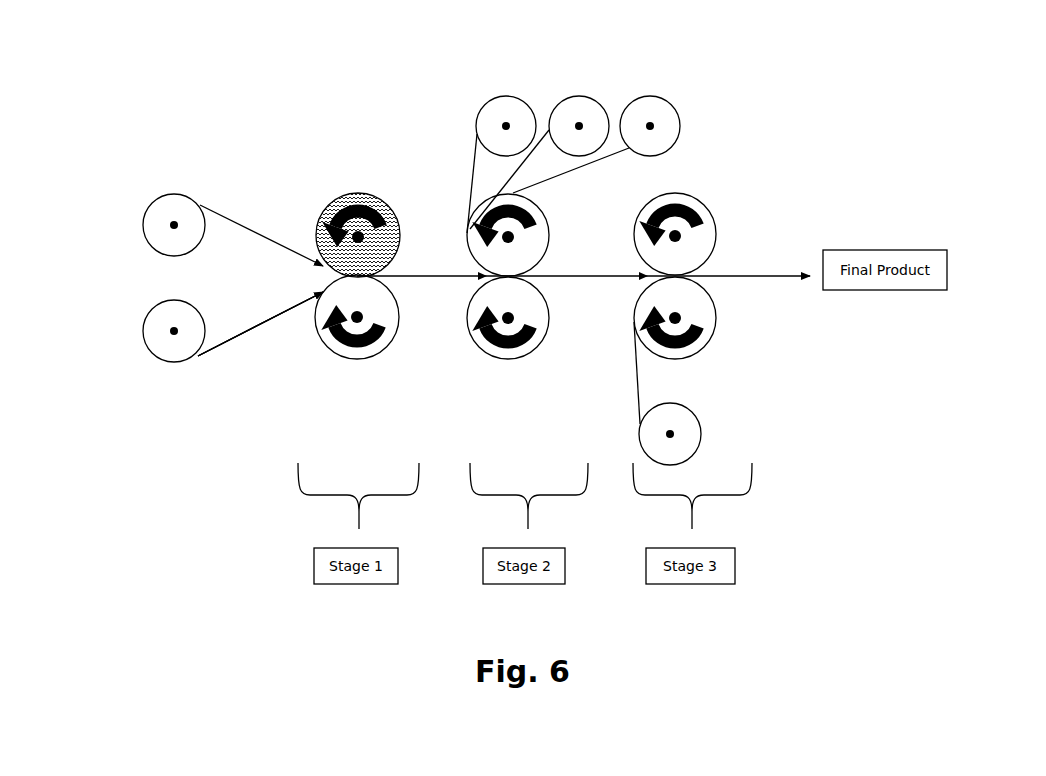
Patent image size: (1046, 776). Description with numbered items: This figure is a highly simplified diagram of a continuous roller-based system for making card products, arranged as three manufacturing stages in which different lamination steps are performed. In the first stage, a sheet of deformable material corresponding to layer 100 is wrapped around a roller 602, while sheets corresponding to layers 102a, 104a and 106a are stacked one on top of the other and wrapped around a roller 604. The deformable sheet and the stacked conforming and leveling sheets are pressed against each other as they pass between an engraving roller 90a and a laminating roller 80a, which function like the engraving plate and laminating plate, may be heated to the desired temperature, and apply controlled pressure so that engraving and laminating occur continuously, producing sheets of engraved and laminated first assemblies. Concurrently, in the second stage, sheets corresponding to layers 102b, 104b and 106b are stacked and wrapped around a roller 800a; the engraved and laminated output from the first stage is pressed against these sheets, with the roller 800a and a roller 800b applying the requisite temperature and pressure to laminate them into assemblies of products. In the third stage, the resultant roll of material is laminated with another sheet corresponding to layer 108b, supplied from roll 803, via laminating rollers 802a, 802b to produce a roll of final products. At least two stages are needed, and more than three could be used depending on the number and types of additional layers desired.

The layer 100 is at (239, 218).
The roller 602 is at (144, 226).
The roller 604 is at (144, 330).
The layer 102a is at (247, 333).
The layer 104a is at (257, 365).
The layer 106a is at (257, 377).
The engraving roller 90a is at (385, 200).
The laminating roller 80a is at (350, 358).
The layer 102b is at (475, 150).
The layer 104b is at (543, 133).
The layer 106b is at (617, 158).
The roller 800a is at (545, 208).
The roller 800b is at (500, 358).
The laminating roller 802a is at (712, 205).
The laminating roller 802b is at (716, 316).
The layer 108b is at (637, 362).
The supply roll stage 3 803 is at (705, 427).